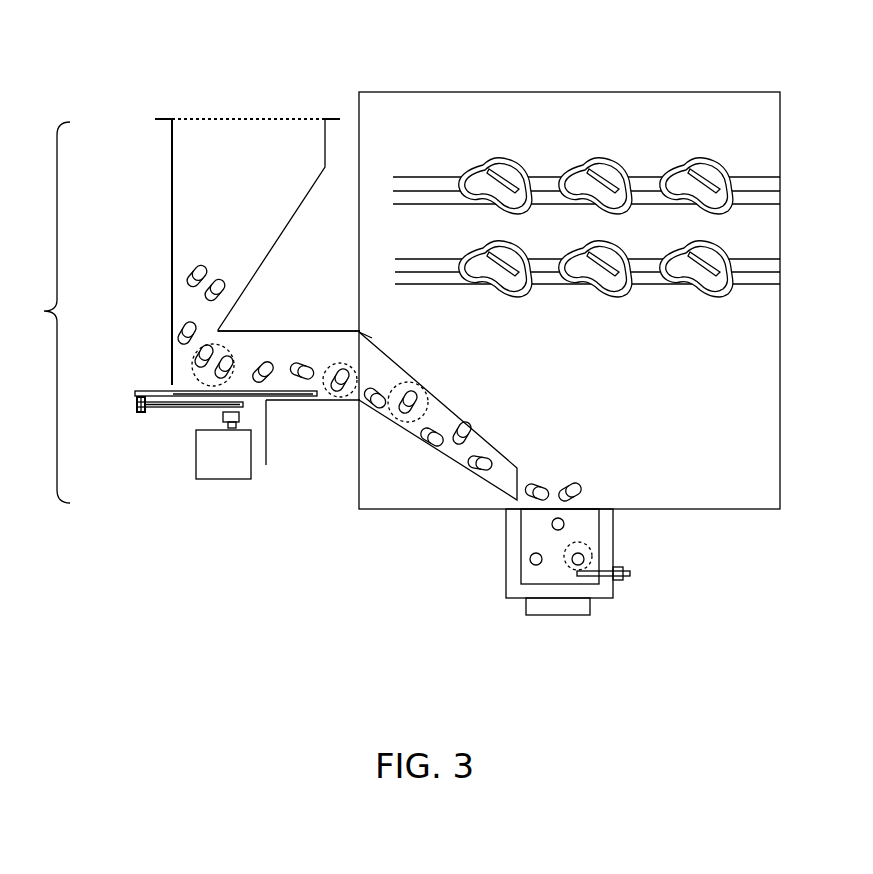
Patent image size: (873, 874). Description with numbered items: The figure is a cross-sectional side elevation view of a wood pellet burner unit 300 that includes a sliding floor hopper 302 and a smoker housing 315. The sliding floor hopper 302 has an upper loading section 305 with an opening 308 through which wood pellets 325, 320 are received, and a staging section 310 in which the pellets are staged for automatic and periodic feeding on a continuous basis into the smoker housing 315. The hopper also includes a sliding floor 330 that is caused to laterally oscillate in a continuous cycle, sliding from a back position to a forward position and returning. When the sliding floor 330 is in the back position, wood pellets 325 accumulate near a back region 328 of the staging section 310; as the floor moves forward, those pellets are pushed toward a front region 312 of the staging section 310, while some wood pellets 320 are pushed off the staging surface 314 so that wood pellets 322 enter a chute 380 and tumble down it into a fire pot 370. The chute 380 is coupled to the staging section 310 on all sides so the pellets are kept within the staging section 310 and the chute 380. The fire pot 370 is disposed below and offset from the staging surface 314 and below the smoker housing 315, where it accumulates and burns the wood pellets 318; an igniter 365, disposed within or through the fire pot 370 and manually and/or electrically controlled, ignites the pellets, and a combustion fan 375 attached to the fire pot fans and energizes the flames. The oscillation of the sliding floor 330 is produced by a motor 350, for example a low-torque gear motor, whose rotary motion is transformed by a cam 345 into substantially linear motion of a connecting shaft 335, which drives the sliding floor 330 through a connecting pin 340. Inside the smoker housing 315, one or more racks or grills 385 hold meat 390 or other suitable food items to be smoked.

The wood pellet burner unit 300 is at (120, 66).
The sliding floor hopper 302 is at (38, 312).
The upper loading section 305 is at (220, 137).
The opening 308 is at (247, 102).
The staging section 310 is at (242, 330).
The front region 312 is at (362, 330).
The staging surface 314 is at (330, 400).
The smoker housing 315 is at (645, 92).
The wood pellets 318 is at (592, 549).
The wood pellets 320 is at (342, 368).
The wood pellets 322 is at (430, 400).
The wood pellets 325 is at (238, 362).
The back region 328 is at (178, 352).
The sliding floor 330 is at (170, 390).
The connecting shaft 335 is at (178, 408).
The connecting pin 340 is at (137, 400).
The cam 345 is at (241, 420).
The motor 350 is at (196, 458).
The igniter 365 is at (618, 571).
The fire pot 370 is at (527, 553).
The combustion fan 375 is at (527, 604).
The chute 380 is at (404, 365).
The racks or grills 385 is at (787, 155).
The meat 390 is at (728, 148).